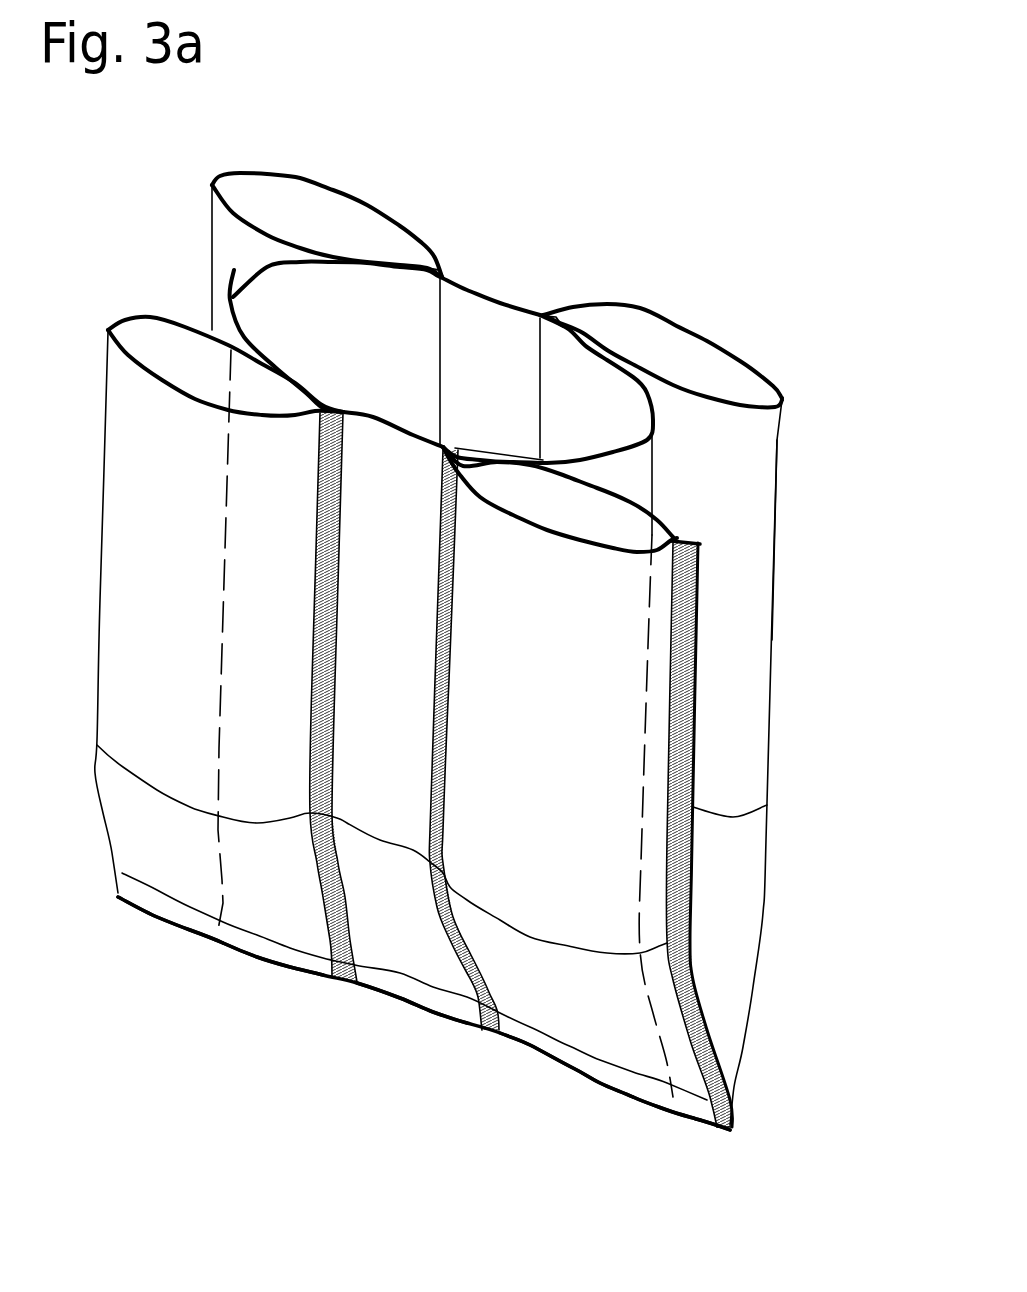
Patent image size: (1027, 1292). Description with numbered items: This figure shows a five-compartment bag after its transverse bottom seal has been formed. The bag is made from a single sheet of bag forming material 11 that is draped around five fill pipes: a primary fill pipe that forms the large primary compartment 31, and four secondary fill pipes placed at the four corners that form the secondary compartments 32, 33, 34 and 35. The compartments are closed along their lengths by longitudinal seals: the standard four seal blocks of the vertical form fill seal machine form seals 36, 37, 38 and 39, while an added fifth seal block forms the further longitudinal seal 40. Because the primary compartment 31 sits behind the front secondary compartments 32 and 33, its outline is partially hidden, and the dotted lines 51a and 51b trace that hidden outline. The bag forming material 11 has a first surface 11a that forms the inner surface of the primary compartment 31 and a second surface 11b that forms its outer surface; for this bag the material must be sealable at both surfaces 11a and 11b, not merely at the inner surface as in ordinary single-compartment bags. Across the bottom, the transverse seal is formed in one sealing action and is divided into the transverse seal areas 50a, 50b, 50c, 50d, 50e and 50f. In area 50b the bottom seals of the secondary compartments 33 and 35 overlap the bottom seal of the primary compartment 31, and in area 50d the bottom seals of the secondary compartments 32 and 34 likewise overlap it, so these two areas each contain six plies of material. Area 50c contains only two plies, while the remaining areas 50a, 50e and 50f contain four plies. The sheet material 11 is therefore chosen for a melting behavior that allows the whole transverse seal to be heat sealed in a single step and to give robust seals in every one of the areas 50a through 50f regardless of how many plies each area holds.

The bag forming material 11 is at (488, 328).
The first surface 11a is at (523, 333).
The second surface 11b is at (382, 443).
The primary compartment 31 is at (273, 300).
The secondary compartment 32 is at (613, 518).
The secondary compartment 33 is at (150, 340).
The secondary compartment 34 is at (700, 357).
The secondary compartment 35 is at (353, 225).
The longitudinal seal 36 is at (553, 315).
The longitudinal seal 37 is at (430, 260).
The longitudinal seal 38 is at (343, 973).
The longitudinal seal 39 is at (483, 1027).
The fifth longitudinal seal 40 is at (722, 1128).
The transverse seal area 50a is at (170, 915).
The transverse seal area 50b is at (263, 943).
The transverse seal area 50c is at (420, 997).
The transverse seal area 50d is at (592, 1072).
The transverse seal area 50e is at (685, 1108).
The transverse seal area 50f is at (733, 1105).
The dotted line 51a is at (229, 507).
The dotted line 51b is at (648, 667).